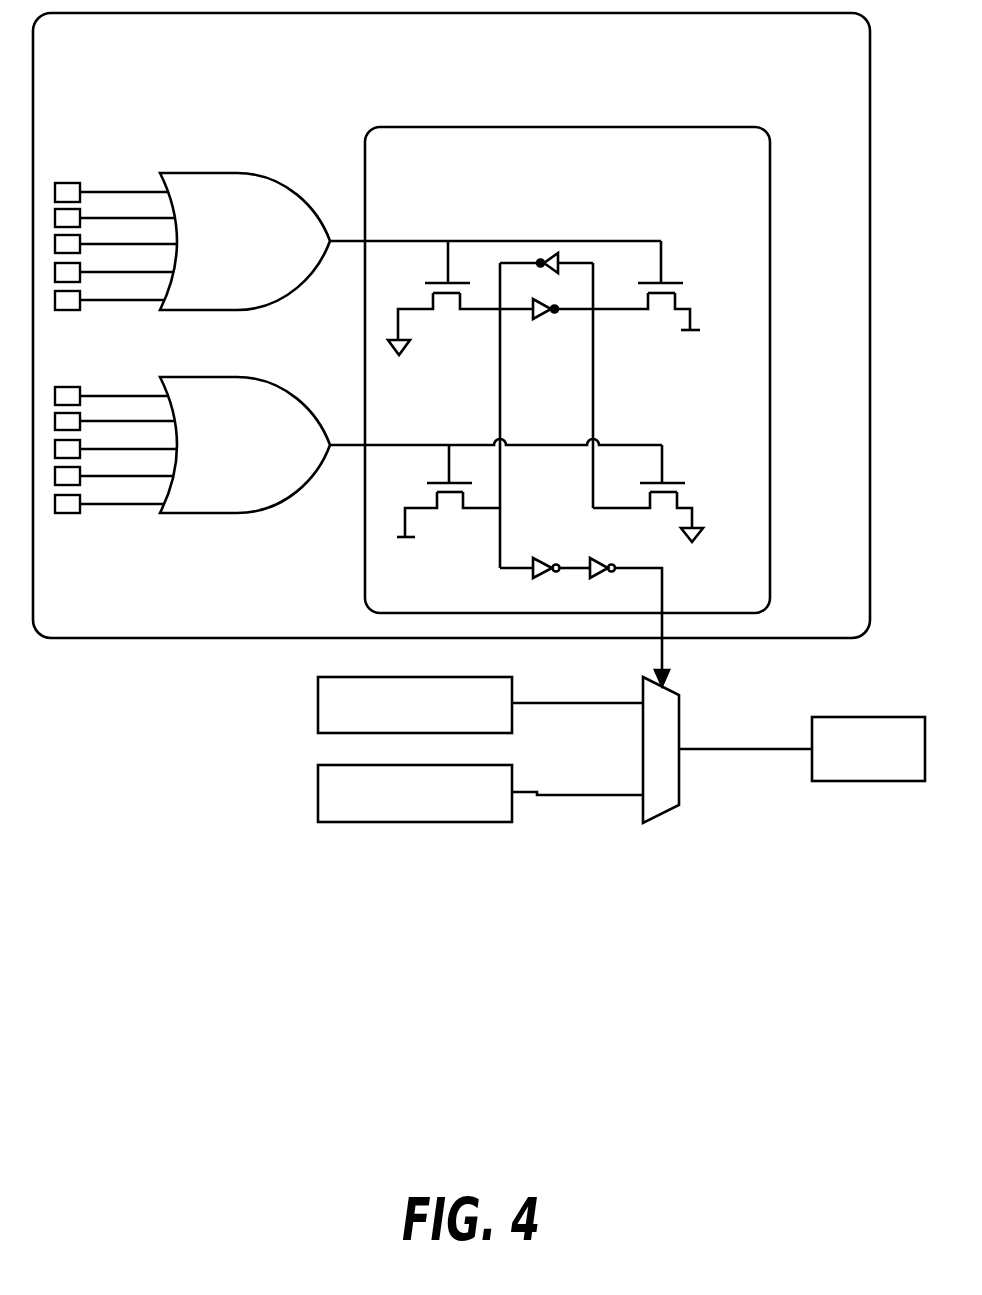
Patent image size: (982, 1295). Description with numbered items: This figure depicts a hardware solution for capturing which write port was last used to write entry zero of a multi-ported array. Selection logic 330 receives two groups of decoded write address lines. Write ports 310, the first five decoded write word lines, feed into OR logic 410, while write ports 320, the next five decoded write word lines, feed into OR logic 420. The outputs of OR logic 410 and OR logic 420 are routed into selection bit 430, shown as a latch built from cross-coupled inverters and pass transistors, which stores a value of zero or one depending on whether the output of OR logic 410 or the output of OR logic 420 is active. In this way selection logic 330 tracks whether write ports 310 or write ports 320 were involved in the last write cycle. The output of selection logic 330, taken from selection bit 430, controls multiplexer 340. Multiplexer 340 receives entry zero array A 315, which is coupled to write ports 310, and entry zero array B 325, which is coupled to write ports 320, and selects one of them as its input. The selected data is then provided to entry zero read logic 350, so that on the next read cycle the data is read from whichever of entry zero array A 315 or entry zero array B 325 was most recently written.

The write ports 0-4 310 is at (71, 156).
The write ports 5-9 320 is at (80, 535).
The selection logic 330 is at (468, 76).
The OR logic 410 is at (410, 241).
The OR logic 420 is at (411, 445).
The selection bit 430 is at (585, 190).
The multiplexer 340 is at (727, 750).
The entry 0 array A 315 is at (480, 705).
The entry 0 array B 325 is at (480, 793).
The entry 0 read logic 350 is at (868, 781).